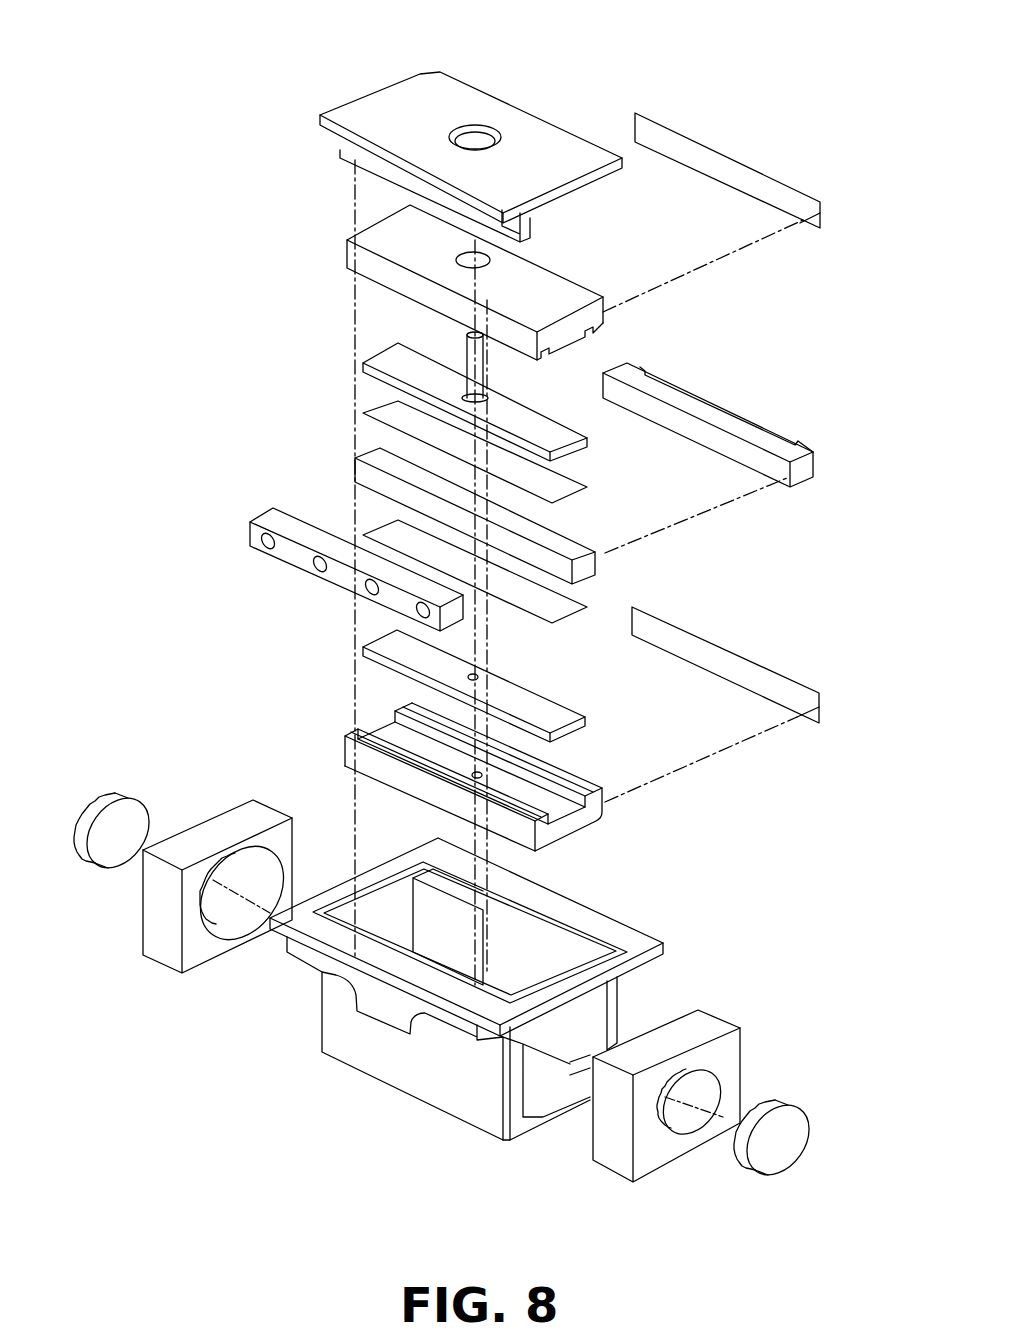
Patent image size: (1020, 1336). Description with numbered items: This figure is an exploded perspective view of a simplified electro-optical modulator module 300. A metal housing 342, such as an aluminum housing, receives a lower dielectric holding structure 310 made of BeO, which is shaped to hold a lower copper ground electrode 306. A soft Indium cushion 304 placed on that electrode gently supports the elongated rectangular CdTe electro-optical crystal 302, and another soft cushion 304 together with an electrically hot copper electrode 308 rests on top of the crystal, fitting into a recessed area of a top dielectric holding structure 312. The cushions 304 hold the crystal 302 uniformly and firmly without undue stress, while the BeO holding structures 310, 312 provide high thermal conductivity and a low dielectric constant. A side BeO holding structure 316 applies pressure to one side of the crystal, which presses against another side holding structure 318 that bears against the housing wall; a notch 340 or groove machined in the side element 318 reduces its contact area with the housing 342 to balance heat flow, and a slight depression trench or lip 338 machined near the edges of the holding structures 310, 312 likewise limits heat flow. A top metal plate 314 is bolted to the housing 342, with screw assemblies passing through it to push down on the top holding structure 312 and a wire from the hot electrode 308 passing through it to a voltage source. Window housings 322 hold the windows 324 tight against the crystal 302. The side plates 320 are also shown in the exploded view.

The EO modulator module 300 is at (232, 27).
The electro-optical crystal 302 is at (368, 452).
The soft cushion 304 is at (372, 408).
The lower electrode 306 is at (363, 648).
The hot copper electrode 308 is at (375, 348).
The lower dielectric holding structure 310 is at (345, 740).
The top dielectric holding structure 312 is at (375, 212).
The top metal plate 314 is at (380, 85).
The side BeO holding structure 316 is at (250, 527).
The side holding structure 318 is at (737, 412).
The side plate 320 is at (778, 178).
The window housing 322 is at (162, 965).
The window 324 is at (75, 858).
The depression trench or lip 338 is at (598, 333).
The notch 340 is at (714, 401).
The housing 342 is at (653, 918).